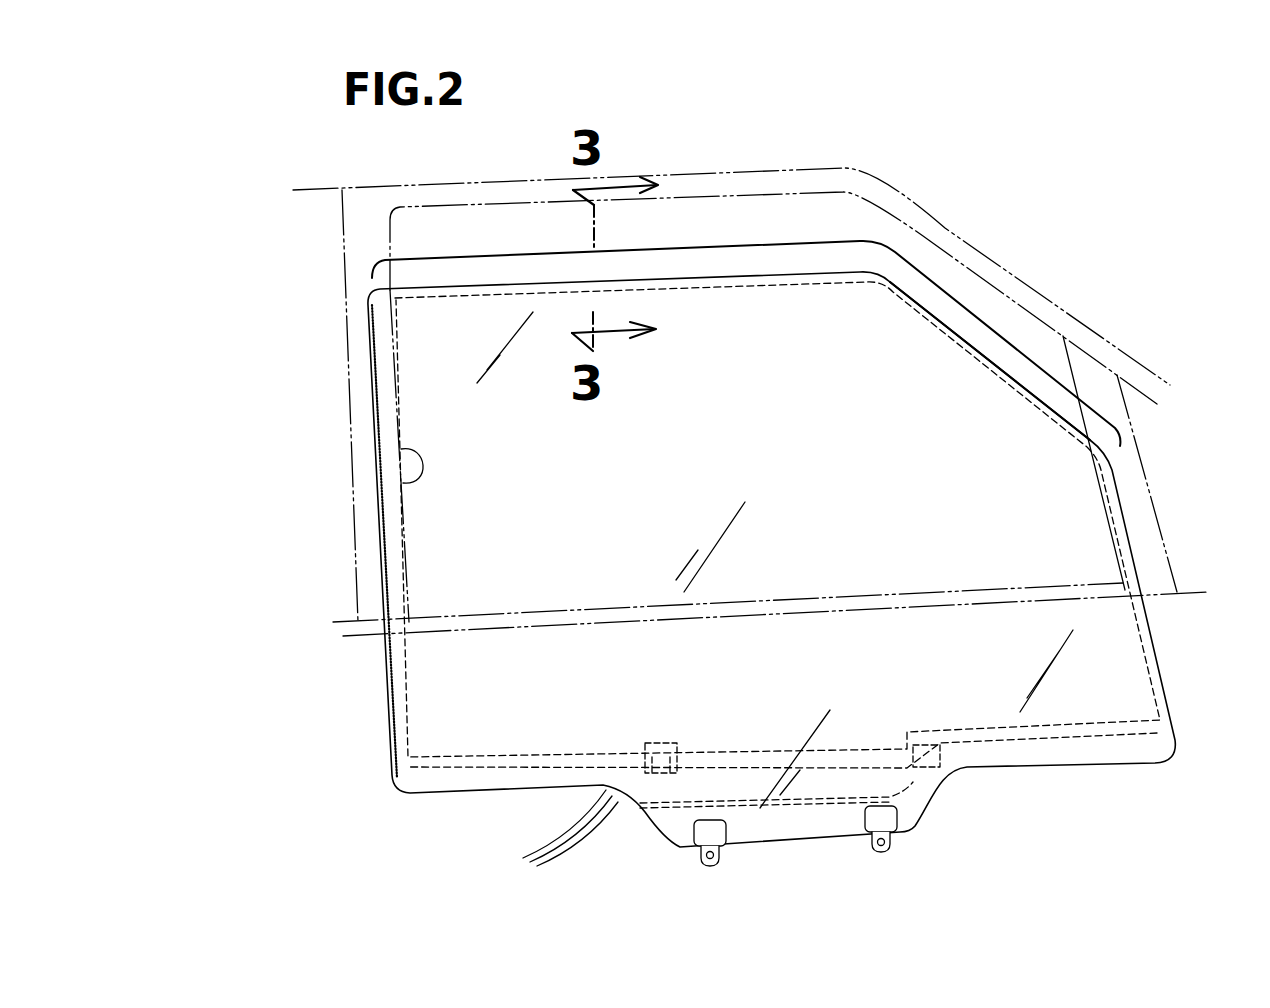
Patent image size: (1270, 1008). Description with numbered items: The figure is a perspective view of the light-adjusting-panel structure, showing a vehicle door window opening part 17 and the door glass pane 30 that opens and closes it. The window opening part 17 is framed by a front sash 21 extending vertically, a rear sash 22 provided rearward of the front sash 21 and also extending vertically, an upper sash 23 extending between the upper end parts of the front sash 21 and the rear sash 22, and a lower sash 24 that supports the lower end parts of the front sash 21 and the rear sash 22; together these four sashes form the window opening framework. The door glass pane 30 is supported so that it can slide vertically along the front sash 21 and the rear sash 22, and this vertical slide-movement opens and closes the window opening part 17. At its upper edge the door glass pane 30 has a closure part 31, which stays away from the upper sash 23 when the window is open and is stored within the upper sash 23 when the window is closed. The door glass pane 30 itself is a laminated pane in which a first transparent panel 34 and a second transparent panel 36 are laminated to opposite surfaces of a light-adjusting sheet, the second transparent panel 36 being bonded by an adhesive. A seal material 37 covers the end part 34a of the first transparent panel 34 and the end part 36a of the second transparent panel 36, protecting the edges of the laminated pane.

The window opening part 17 is at (410, 483).
The front sash 21 is at (1137, 454).
The rear sash 22 is at (348, 377).
The upper sash 23 is at (783, 185).
The lower sash 24 is at (777, 602).
The door glass pane 30 is at (366, 327).
The closure part 31 is at (705, 252).
The first transparent panel 34 is at (777, 545).
The end part of the first transparent panel 34a is at (968, 293).
The second transparent panel 36 is at (758, 403).
The end part of the second transparent panel 36a is at (847, 273).
The seal material 37 is at (385, 533).